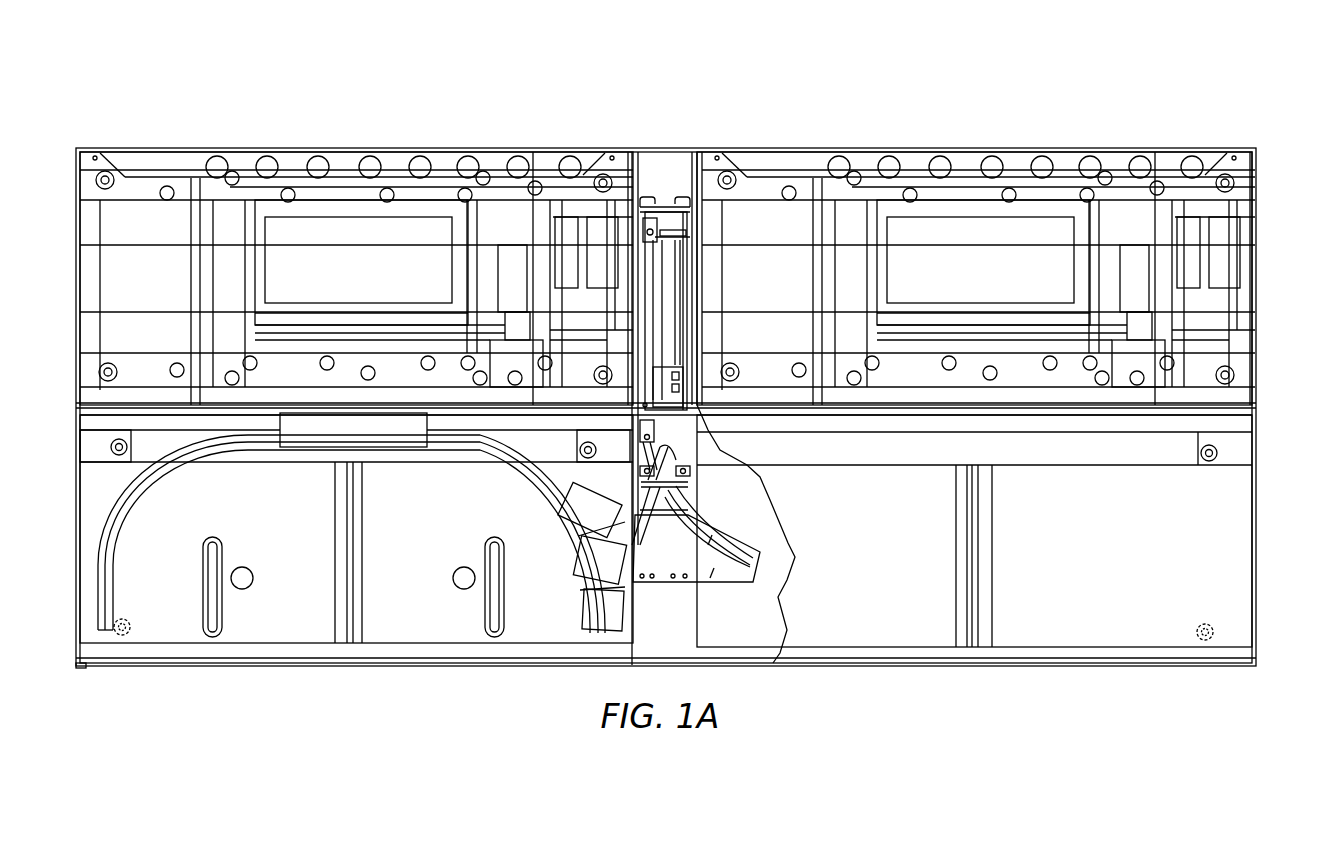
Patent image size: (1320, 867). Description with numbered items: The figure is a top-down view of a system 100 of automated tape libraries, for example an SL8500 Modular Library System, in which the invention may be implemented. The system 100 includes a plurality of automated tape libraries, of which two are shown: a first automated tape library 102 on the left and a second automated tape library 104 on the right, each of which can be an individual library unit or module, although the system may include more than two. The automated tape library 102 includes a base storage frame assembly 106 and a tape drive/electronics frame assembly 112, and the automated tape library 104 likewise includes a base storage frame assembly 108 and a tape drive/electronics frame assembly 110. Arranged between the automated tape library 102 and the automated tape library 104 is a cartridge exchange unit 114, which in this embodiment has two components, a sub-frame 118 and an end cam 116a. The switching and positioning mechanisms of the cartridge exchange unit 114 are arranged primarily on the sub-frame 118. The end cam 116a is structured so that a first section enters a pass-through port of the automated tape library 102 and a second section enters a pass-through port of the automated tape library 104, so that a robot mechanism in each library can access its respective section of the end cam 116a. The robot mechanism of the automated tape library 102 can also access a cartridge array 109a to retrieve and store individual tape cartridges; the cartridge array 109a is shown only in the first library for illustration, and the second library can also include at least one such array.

The system 100 is at (410, 74).
The automated tape library 102 is at (74, 271).
The automated tape library 104 is at (1262, 276).
The base storage frame assembly 106 is at (411, 541).
The base storage frame assembly 108 is at (1098, 567).
The tape drive/electronics frame assembly 110 is at (959, 287).
The tape drive/electronics frame assembly 112 is at (333, 287).
The cartridge exchange unit 114 is at (664, 185).
The end cam 116a is at (692, 600).
The sub-frame 118 is at (685, 162).
The cartridge array 109a is at (568, 505).